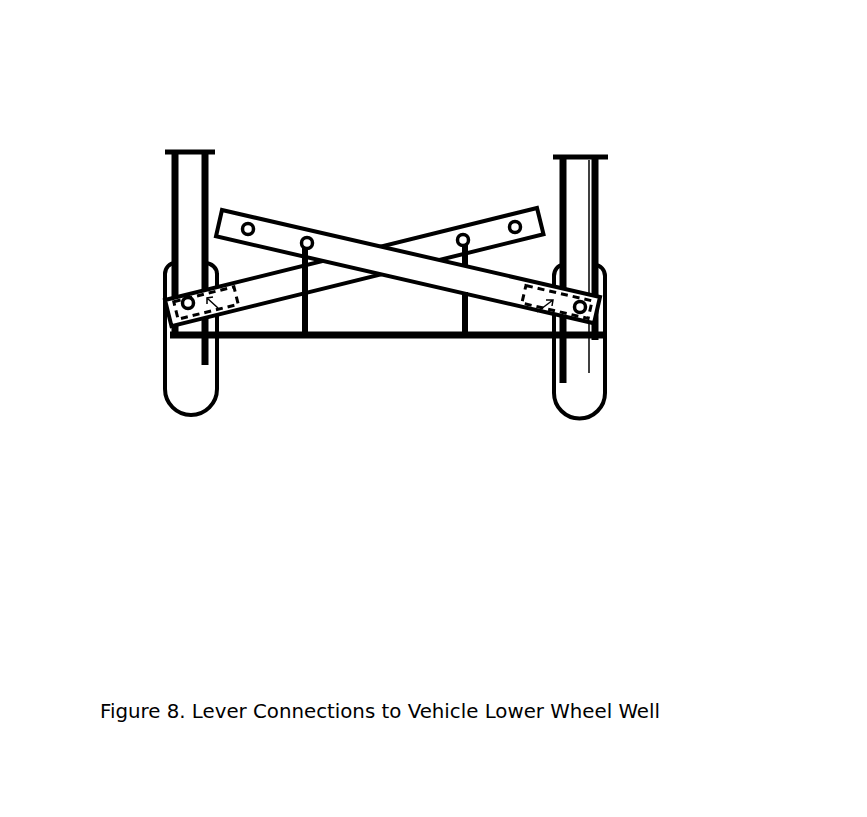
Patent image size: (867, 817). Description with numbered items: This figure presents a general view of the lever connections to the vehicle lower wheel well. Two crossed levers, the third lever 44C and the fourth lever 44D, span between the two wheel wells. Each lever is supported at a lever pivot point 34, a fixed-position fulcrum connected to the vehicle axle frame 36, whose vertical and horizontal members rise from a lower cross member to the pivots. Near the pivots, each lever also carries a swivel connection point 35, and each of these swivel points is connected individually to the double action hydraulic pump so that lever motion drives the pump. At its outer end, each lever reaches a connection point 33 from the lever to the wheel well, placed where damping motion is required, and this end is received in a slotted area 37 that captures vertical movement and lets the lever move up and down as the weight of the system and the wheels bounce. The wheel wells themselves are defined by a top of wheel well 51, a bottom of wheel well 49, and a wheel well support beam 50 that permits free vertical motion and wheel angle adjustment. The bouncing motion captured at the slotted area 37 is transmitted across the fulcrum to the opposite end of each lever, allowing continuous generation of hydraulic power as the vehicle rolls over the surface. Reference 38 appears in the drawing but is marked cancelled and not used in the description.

The connection point from lever to wheel well 33 is at (553, 340).
The lever pivot point 34 is at (320, 222).
The swivel connection point 35 is at (260, 210).
The vehicle axle frame 36 is at (321, 339).
The slotted area 37 is at (553, 340).
The cancelled 38 is at (220, 411).
The lever 3 44C is at (399, 234).
The lever 4 44D is at (408, 290).
The bottom of wheel well 49 is at (189, 352).
The wheel well support beam 50 is at (160, 186).
The top of wheel well 51 is at (180, 140).